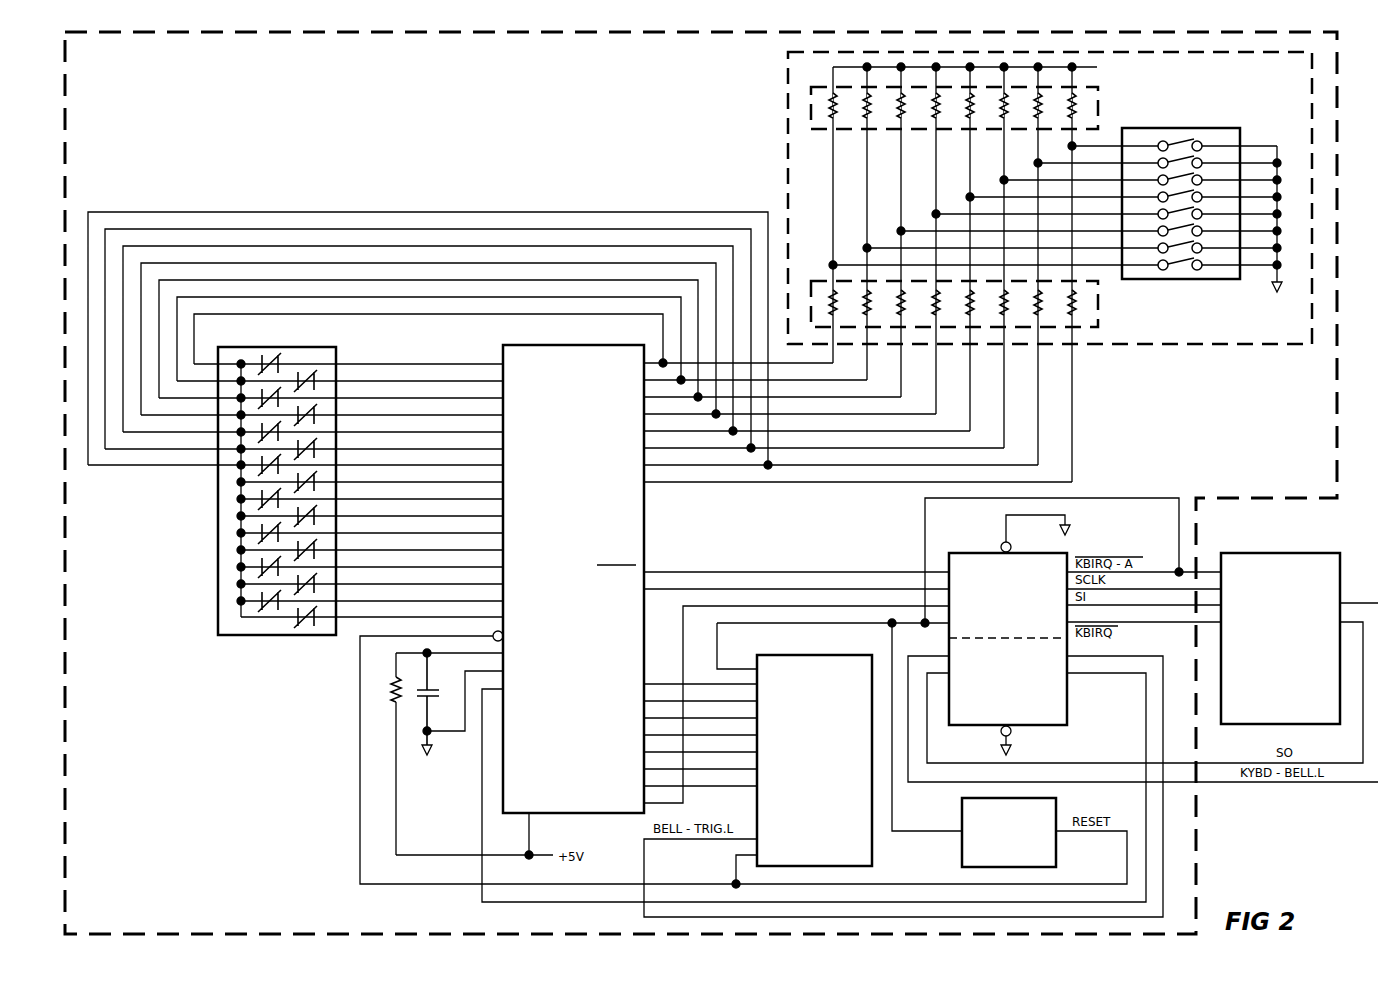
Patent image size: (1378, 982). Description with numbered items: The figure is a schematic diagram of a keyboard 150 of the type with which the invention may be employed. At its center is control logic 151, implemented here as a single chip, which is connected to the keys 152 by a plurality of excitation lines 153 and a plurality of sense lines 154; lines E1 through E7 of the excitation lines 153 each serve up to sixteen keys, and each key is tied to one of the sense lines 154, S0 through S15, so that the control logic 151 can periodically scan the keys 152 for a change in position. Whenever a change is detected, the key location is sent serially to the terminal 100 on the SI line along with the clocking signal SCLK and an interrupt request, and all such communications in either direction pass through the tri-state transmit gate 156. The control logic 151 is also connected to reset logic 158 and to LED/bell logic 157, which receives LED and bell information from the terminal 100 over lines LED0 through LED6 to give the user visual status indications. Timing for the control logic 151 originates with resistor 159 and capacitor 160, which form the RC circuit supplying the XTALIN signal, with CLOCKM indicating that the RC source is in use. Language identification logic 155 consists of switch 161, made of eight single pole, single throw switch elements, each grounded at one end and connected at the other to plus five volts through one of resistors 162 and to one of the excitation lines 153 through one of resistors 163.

The terminal 100 is at (1268, 553).
The keyboard 150 is at (701, 483).
The control logic 151 is at (557, 348).
The keys 152 is at (336, 348).
The excitation lines 153 is at (458, 212).
The sense lines 154 is at (432, 358).
The language identification logic 155 is at (788, 117).
The tri-state transmit gate 156 is at (1068, 683).
The LED/bell logic 157 is at (872, 860).
The reset logic 158 is at (1056, 860).
The resistor 159 is at (432, 700).
The capacitor 160 is at (393, 690).
The switch 161 is at (1215, 128).
The resistors 162 is at (1099, 109).
The resistors 163 is at (1099, 306).